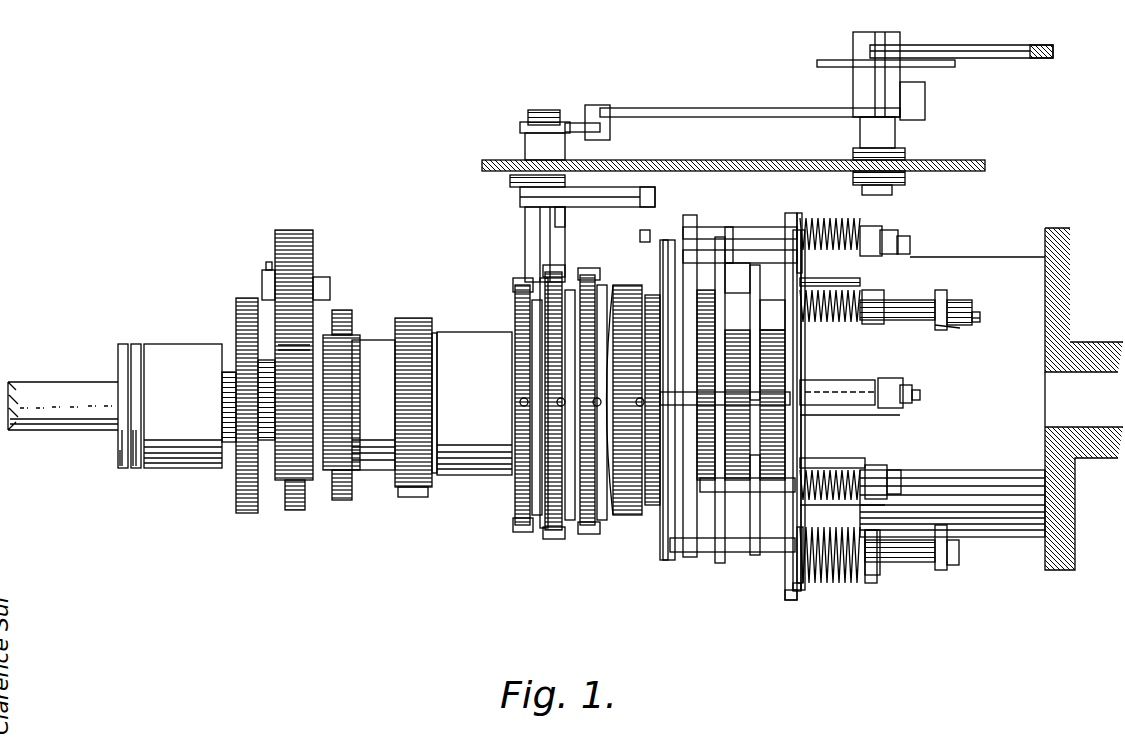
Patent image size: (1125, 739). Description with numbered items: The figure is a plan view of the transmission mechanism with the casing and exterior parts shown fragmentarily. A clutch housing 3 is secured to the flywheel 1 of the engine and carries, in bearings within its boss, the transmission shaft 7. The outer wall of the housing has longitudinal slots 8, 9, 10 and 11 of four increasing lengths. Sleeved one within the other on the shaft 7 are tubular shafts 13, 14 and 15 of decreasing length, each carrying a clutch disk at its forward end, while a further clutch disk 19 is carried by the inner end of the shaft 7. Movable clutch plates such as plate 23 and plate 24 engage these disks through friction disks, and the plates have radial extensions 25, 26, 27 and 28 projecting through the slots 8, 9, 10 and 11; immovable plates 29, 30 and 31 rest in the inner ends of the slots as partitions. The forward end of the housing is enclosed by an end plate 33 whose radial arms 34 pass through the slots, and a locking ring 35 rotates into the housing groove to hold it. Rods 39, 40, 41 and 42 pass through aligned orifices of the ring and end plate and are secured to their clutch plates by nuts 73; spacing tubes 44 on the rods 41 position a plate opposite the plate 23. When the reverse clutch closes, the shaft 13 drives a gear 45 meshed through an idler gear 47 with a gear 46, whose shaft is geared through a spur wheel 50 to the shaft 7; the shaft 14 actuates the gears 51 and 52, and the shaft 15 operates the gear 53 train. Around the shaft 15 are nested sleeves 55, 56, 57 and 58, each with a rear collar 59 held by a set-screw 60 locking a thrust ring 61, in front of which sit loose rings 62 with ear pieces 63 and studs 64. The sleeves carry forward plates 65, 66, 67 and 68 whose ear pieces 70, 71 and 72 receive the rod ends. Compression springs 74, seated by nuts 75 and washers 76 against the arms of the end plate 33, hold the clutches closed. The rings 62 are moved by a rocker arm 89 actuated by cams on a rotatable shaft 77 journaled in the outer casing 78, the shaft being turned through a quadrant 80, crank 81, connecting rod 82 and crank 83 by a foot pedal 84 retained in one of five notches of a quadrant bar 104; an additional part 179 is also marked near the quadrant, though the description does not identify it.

The flywheel 1 is at (1045, 236).
The clutch housing 3 is at (995, 537).
The propeller or transmission shaft 7 is at (85, 398).
The slot 8 is at (840, 285).
The slot 9 is at (830, 462).
The slot 10 is at (912, 388).
The slot 11 is at (968, 306).
The tubular shaft 13 is at (268, 372).
The tubular shaft 14 is at (330, 342).
The tubular shaft 15 is at (398, 350).
The clutch disk 19 is at (975, 332).
The plate 23 is at (905, 412).
The plate 24 is at (940, 330).
The radial extension 25 is at (912, 244).
The radial extension 26 is at (898, 234).
The radial extension 27 is at (922, 395).
The radial extension 28 is at (945, 298).
The immovable plate 29 is at (805, 583).
The immovable plate 30 is at (890, 465).
The immovable plate 31 is at (775, 290).
The end plate 33 is at (805, 366).
The radial arm 34 is at (795, 592).
The locking ring 35 is at (792, 600).
The rod 39 is at (802, 222).
The rod 40 is at (760, 250).
The rod 41 is at (698, 250).
The rod 42 is at (900, 318).
The spacing tube 44 is at (858, 396).
The gear 45 is at (285, 450).
The gear 46 is at (297, 498).
The idler gear 47 is at (278, 248).
The spur wheel 50 is at (240, 315).
The gear 51 is at (372, 462).
The gear 52 is at (348, 318).
The gear 53 is at (420, 487).
The sleeve 55 is at (737, 405).
The sleeve 56 is at (725, 389).
The sleeve 57 is at (625, 400).
The sleeve 58 is at (655, 365).
The collar 59 is at (522, 372).
The set-screw 60 is at (558, 405).
The thrust ring 61 is at (537, 343).
The loose ring 62 is at (570, 300).
The ear piece 63 is at (568, 290).
The stud 64 is at (598, 275).
The plate 65 is at (755, 285).
The plate 66 is at (724, 283).
The plate 67 is at (728, 230).
The plate 68 is at (648, 250).
The ear piece 70 is at (728, 255).
The ear piece 71 is at (692, 230).
The ear piece 72 is at (670, 240).
The nut 73 is at (955, 565).
The compression spring 74 is at (836, 230).
The nut 75 is at (870, 228).
The washer 76 is at (870, 583).
The rotatable shaft 77 is at (525, 253).
The outer casing 78 is at (665, 160).
The quadrant 80 is at (620, 185).
The crank 81 is at (578, 123).
The connecting rod 82 is at (716, 110).
The crank 83 is at (925, 95).
The foot pedal 84 is at (940, 48).
The rocker arm 89 is at (543, 280).
The quadrant bar 104 is at (826, 60).
The pin 179 is at (583, 219).